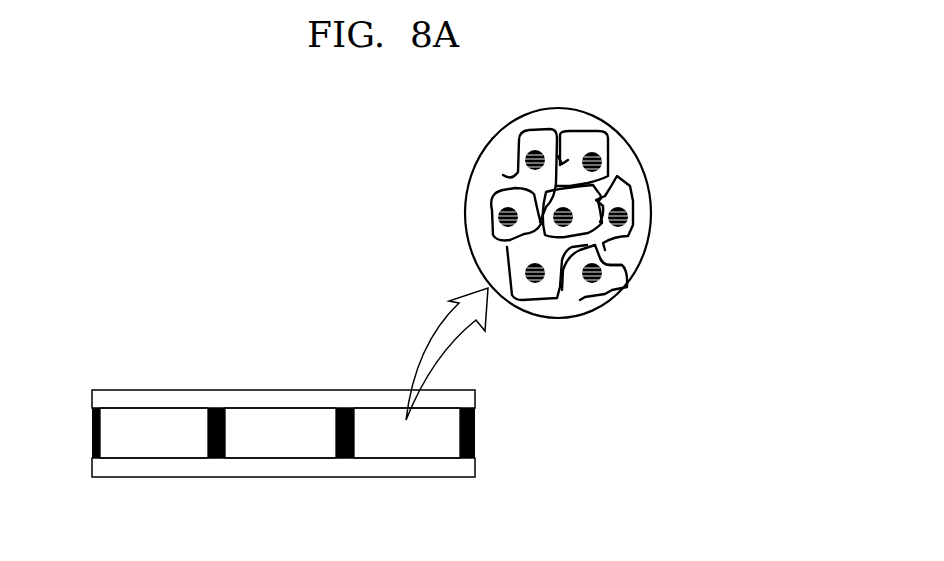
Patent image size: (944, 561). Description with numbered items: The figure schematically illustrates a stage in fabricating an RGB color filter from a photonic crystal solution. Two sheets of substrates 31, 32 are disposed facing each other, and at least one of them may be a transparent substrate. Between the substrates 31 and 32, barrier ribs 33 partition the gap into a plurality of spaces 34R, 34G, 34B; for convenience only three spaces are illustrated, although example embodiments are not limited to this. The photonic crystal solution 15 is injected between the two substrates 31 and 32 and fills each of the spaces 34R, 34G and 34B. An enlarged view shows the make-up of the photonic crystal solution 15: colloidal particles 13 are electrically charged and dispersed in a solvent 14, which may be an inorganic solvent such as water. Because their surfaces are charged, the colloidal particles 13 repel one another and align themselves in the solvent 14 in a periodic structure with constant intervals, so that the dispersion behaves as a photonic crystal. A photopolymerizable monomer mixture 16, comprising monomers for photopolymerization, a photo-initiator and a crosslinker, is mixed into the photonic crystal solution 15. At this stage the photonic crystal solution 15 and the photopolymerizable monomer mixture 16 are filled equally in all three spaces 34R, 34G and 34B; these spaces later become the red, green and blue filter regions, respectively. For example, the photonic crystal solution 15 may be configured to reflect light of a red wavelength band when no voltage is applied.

The colloidal particles 13 is at (602, 158).
The solvent 14 is at (620, 167).
The photonic crystal solution 15 is at (663, 199).
The photopolymerizable monomer mixture 16 is at (623, 258).
The substrate 31 is at (105, 466).
The substrate 32 is at (105, 401).
The barrier ribs 33 is at (216, 408).
The space 34R is at (155, 452).
The space 34G is at (283, 450).
The space 34B is at (405, 450).